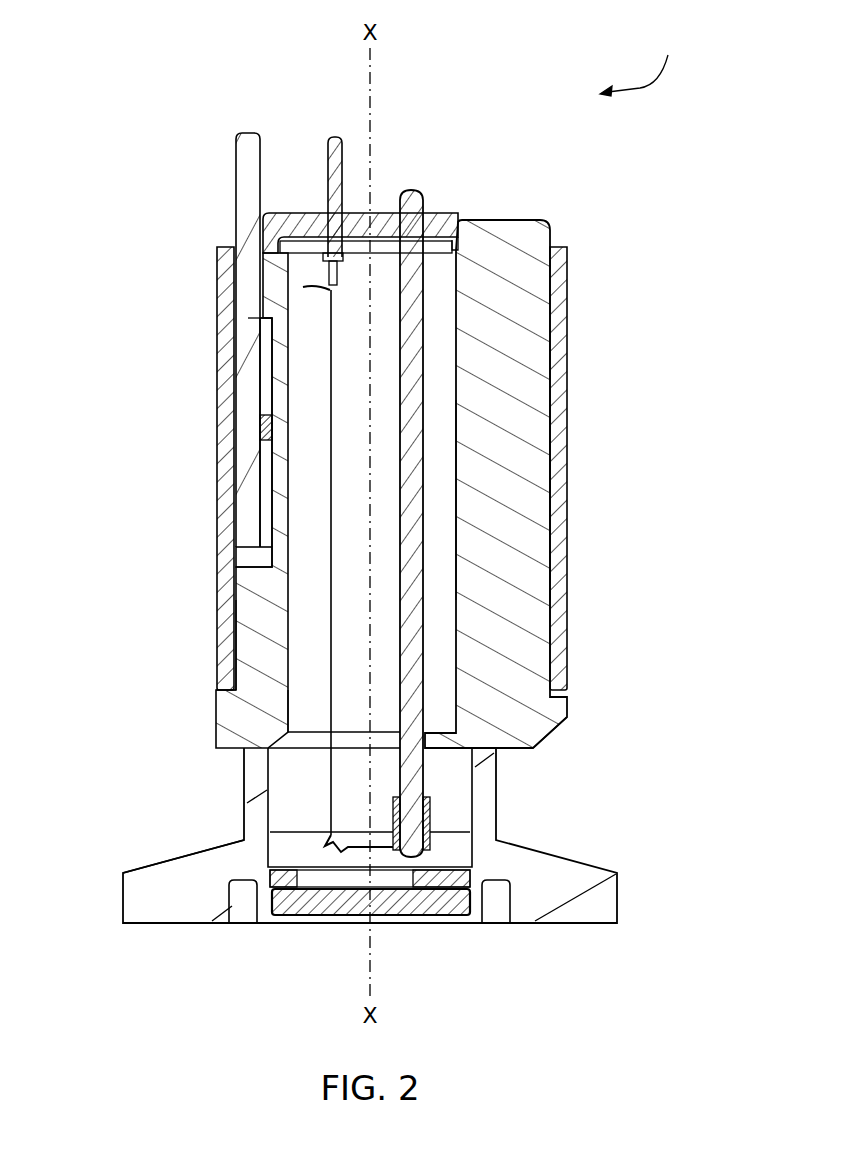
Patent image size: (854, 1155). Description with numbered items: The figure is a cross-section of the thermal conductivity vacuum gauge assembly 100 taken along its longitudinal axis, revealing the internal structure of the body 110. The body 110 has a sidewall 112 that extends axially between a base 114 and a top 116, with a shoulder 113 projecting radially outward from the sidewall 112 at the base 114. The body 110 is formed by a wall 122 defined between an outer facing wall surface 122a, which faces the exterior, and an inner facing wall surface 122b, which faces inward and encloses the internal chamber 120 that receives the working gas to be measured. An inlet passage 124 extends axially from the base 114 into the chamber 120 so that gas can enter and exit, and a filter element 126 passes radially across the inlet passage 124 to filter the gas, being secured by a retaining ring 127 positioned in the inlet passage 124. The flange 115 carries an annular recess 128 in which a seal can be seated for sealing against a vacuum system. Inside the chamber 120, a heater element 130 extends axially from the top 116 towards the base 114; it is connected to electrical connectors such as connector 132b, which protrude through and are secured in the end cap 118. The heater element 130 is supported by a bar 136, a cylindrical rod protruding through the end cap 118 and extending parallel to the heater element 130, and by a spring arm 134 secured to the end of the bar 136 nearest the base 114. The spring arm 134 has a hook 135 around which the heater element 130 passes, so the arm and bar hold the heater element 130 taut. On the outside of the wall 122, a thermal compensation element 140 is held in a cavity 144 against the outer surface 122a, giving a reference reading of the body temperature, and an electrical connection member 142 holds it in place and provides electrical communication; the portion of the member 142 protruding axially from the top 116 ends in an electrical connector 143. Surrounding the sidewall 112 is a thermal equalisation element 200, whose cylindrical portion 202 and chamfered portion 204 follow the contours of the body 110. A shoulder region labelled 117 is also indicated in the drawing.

The thermal conductivity vacuum gauge assembly 100 is at (643, 60).
The body 110 is at (530, 392).
The sidewall 112 is at (540, 510).
The shoulder 113 is at (225, 688).
The base 114 is at (520, 748).
The flange 115 is at (187, 868).
The top 116 is at (530, 220).
The shoulder 117 is at (460, 222).
The end cap 118 is at (383, 215).
The internal chamber 120 is at (440, 490).
The wall 122 is at (262, 612).
The outer facing wall surface 122a is at (238, 662).
The inner facing wall surface 122b is at (290, 705).
The inlet passage 124 is at (476, 792).
The filter element 126 is at (327, 910).
The retaining ring 127 is at (460, 890).
The recess 128 is at (245, 907).
The heater element 130 is at (335, 585).
The electrical connector 132b is at (333, 138).
The spring arm 134 is at (393, 883).
The hook 135 is at (323, 840).
The bar 136 is at (410, 690).
The thermal compensation element 140 is at (262, 425).
The electrical connection member 142 is at (268, 378).
The electrical connector 143 is at (250, 133).
The cavity 144 is at (258, 553).
The thermal equalisation element 200 is at (212, 505).
The cylindrical portion 202 is at (566, 292).
The chamfered portion 204 is at (250, 318).